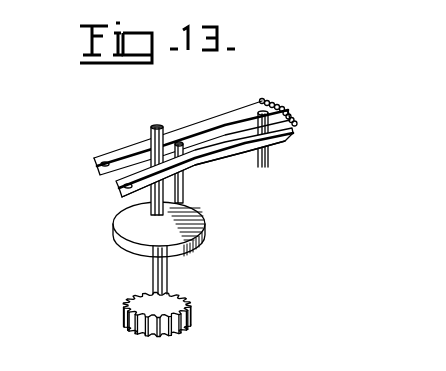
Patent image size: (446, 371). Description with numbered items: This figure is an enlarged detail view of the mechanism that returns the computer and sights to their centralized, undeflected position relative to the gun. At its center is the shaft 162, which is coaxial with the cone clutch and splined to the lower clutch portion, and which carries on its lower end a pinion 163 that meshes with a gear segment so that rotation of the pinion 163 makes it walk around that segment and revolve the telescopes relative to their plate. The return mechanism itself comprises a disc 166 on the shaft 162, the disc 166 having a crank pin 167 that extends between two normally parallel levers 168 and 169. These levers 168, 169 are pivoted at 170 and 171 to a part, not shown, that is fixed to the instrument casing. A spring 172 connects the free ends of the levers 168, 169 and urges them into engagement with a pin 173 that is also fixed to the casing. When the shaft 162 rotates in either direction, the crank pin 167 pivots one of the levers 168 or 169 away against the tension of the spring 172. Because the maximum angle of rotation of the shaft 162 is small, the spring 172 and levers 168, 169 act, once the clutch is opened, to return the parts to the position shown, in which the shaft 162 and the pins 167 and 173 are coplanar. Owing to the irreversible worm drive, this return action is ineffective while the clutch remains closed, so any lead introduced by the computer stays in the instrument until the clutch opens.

The shaft 162 is at (155, 130).
The pinion 163 is at (143, 299).
The disc 166 is at (197, 222).
The crank pin 167 is at (181, 142).
The lever 168 is at (232, 118).
The lever 169 is at (290, 133).
The pivot 170 is at (98, 167).
The pivot 171 is at (118, 190).
The spring 172 is at (292, 120).
The pin 173 is at (257, 162).